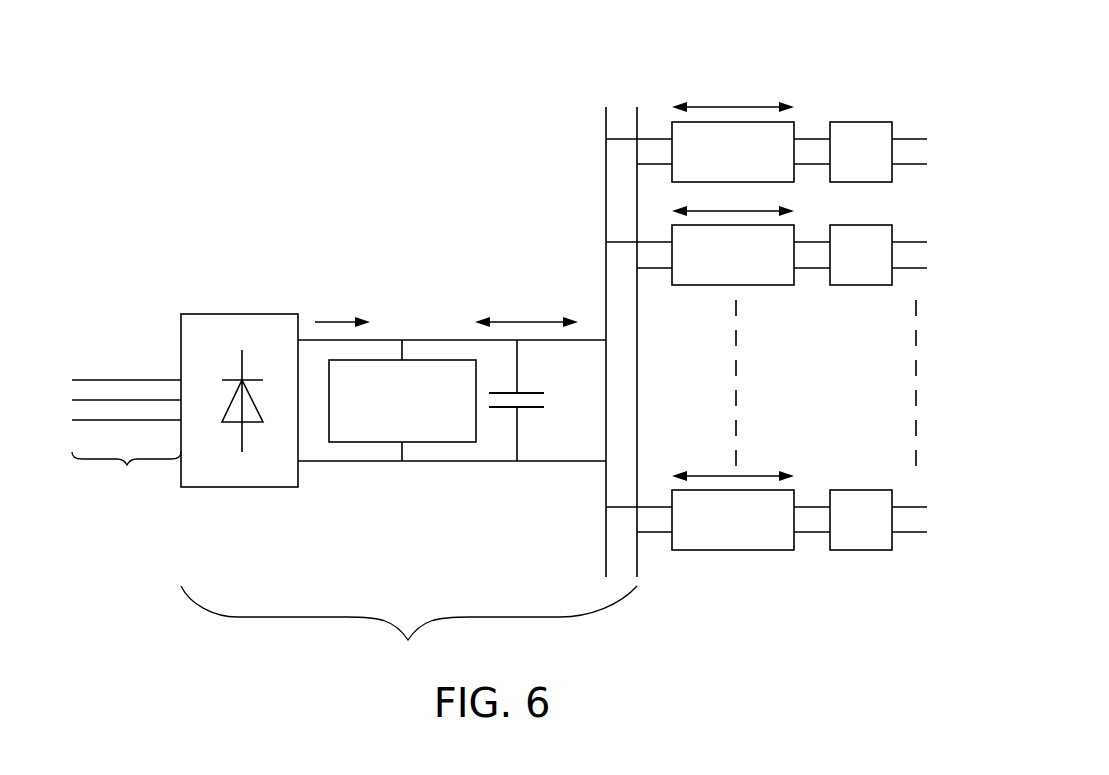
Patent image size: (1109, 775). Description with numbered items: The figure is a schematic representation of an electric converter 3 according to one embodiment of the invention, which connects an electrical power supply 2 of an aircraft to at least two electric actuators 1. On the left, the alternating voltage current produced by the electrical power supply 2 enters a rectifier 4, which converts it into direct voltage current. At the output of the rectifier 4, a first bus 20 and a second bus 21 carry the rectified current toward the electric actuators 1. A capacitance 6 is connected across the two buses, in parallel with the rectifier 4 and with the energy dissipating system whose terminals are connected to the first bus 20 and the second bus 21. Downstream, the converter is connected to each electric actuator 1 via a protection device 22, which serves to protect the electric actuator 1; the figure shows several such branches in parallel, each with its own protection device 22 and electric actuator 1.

The electric actuator 1 is at (872, 138).
The electrical power supply 2 is at (126, 438).
The electric converter 3 is at (409, 628).
The rectifier 4 is at (207, 335).
The capacitance 6 is at (527, 410).
The first bus 20 is at (442, 338).
The second bus 21 is at (517, 463).
The protection device 22 is at (693, 145).